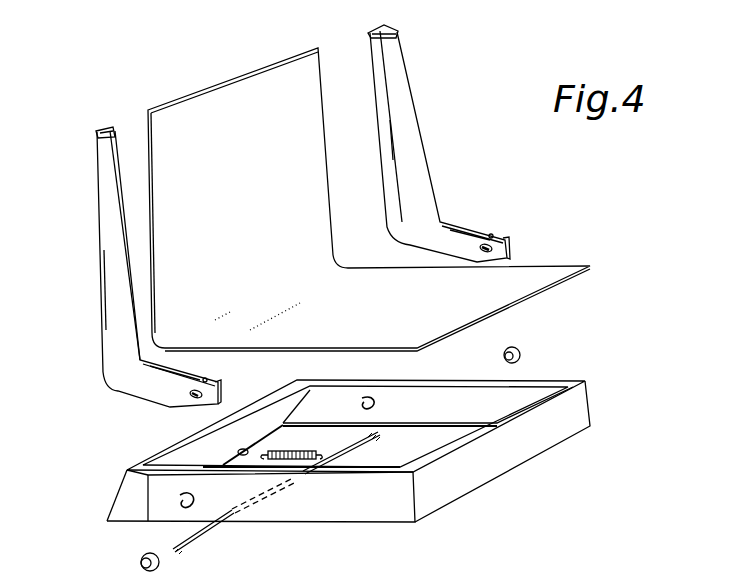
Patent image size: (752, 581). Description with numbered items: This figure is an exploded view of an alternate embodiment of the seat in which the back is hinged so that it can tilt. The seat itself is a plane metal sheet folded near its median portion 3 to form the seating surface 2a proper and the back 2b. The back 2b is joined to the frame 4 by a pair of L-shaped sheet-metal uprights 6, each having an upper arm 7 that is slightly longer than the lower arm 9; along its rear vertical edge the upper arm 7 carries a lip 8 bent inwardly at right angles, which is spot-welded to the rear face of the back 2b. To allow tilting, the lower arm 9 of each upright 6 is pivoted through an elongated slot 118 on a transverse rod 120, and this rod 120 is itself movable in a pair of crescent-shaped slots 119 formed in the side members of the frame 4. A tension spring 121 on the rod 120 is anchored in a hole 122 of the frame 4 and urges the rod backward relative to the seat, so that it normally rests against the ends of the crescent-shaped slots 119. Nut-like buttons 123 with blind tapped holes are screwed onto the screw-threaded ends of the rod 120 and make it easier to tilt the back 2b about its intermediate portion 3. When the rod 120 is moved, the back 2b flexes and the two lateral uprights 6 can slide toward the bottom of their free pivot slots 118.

The seating surface 2a is at (377, 310).
The back 2b is at (369, 198).
The median portion 3 is at (266, 298).
The frame 4 is at (331, 506).
The L-shaped metal upright 6 is at (125, 264).
The upper arm 7 is at (108, 279).
The lip 8 is at (104, 129).
The lower arm 9 is at (130, 386).
The elongated slot 118 is at (193, 399).
The crescent-shaped slot 119 is at (371, 404).
The transverse rod 120 is at (343, 447).
The tension spring 121 is at (308, 452).
The hole 122 is at (243, 448).
The nut-like button 123 is at (520, 352).